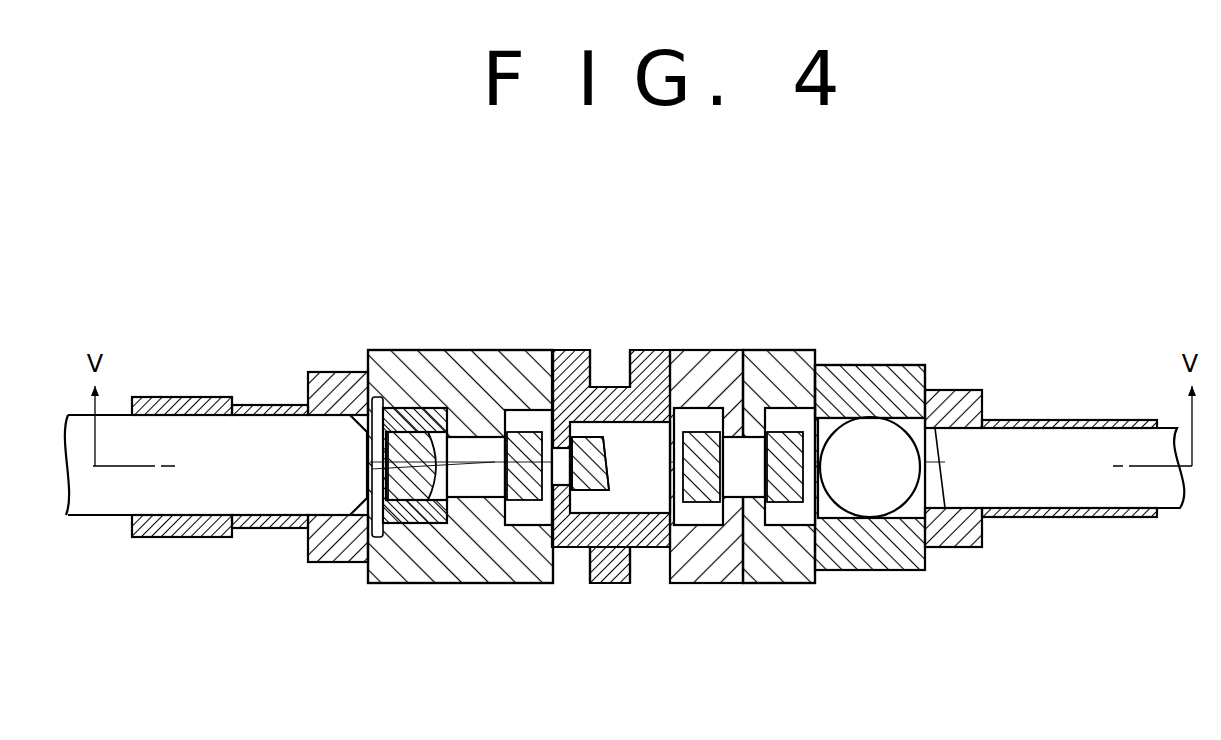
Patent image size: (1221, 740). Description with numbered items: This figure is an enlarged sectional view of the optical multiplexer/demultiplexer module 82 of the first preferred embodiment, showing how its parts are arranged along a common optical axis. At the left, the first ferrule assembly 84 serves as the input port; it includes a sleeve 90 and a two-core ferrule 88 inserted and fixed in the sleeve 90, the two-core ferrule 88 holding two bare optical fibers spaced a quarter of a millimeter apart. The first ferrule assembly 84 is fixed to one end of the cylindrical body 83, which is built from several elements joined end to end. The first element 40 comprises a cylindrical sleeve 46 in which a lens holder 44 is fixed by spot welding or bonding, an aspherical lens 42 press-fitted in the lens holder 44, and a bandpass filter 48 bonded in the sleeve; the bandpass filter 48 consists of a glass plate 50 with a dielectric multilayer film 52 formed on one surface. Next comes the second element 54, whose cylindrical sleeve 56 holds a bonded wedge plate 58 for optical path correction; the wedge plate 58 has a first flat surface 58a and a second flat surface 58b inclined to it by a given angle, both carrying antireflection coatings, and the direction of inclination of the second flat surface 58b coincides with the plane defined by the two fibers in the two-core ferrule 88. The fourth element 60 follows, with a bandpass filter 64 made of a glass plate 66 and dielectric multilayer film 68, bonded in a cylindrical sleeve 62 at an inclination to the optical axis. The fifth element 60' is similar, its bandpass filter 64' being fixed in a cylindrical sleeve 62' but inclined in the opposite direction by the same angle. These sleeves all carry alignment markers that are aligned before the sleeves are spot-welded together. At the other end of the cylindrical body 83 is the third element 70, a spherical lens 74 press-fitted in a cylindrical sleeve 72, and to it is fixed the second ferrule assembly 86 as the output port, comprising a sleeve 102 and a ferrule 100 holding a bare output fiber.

The first element 40 is at (460, 461).
The aspherical lens 42 is at (408, 440).
The lens holder 44 is at (410, 520).
The cylindrical sleeve 46 is at (485, 395).
The bandpass filter 48 is at (522, 505).
The glass plate 50 is at (528, 420).
The dielectric multilayer film 52 is at (498, 477).
The second element 54 is at (610, 386).
The cylindrical sleeve 56 is at (649, 570).
The wedge plate 58 is at (578, 495).
The first flat surface 58a is at (567, 493).
The second flat surface 58b is at (613, 470).
The fourth element 60 is at (742, 428).
The fifth element 60' is at (783, 413).
The cylindrical sleeve 62 is at (706, 442).
The cylindrical sleeve 62' is at (779, 442).
The bandpass filter 64 is at (713, 534).
The bandpass filter 64' is at (785, 549).
The glass plate 66 is at (695, 502).
The dielectric multilayer film 68 is at (674, 480).
The third element 70 is at (870, 455).
The cylindrical sleeve 72 is at (857, 377).
The spherical lens 74 is at (868, 490).
The optical multiplexer/demultiplexer module 82 is at (743, 451).
The cylindrical body 83 is at (600, 471).
The first ferrule assembly 84 is at (216, 449).
The second ferrule assembly 86 is at (1054, 457).
The two-core ferrule 88 is at (184, 509).
The sleeve 90 is at (180, 397).
The ferrule 100 is at (1102, 490).
The sleeve 102 is at (1025, 519).